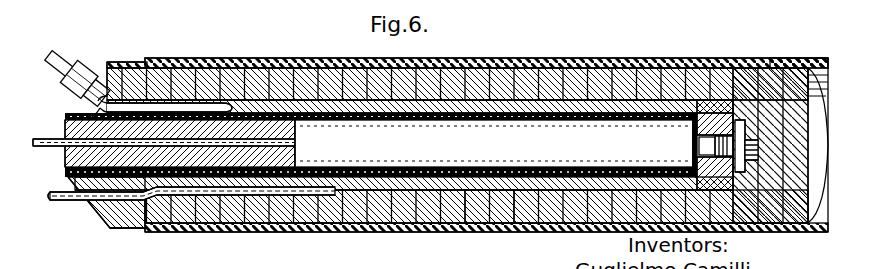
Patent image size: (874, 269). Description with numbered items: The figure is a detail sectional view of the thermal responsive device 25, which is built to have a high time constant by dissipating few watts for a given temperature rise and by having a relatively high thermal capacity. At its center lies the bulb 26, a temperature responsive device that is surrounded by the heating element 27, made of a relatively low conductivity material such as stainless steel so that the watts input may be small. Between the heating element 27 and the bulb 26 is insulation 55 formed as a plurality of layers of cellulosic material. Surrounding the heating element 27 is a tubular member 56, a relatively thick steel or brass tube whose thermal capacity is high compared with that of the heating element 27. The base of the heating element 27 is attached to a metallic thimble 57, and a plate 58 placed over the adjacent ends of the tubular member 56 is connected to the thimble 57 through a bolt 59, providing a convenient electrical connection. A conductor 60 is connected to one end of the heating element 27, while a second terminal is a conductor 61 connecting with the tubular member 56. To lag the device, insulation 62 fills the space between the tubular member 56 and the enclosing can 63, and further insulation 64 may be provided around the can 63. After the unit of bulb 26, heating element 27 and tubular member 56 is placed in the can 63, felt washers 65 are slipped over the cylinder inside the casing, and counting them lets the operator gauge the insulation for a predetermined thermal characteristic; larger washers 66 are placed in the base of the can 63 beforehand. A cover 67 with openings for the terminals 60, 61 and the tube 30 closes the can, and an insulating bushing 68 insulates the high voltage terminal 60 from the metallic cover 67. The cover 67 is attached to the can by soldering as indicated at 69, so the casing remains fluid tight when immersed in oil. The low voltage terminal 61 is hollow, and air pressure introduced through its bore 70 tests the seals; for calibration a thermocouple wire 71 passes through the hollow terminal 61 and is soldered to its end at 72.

The thermal responsive device 25 is at (248, 248).
The bulb 26 is at (575, 112).
The heating element 27 is at (320, 98).
The tube 30 is at (47, 147).
The insulation 55 is at (488, 112).
The tubular member 56 is at (626, 106).
The metallic thimble 57 is at (707, 120).
The plate 58 is at (748, 125).
The bolt 59 is at (777, 66).
The conductor 60 is at (165, 104).
The conductor 61 is at (213, 224).
The insulation 62 is at (538, 66).
The can 63 is at (438, 231).
The insulation 64 is at (496, 231).
The washers 65 is at (741, 136).
The larger washers 66 is at (801, 64).
The cover 67 is at (109, 66).
The insulating bushing 68 is at (83, 62).
The soldering 69 is at (126, 227).
The bore 70 is at (50, 199).
The thermocouple wire 71 is at (68, 201).
The soldered end 72 is at (287, 233).